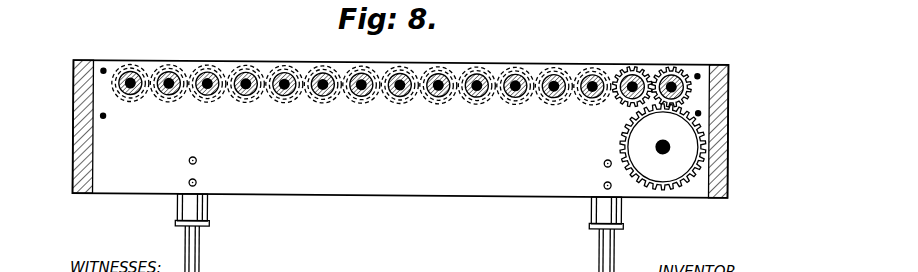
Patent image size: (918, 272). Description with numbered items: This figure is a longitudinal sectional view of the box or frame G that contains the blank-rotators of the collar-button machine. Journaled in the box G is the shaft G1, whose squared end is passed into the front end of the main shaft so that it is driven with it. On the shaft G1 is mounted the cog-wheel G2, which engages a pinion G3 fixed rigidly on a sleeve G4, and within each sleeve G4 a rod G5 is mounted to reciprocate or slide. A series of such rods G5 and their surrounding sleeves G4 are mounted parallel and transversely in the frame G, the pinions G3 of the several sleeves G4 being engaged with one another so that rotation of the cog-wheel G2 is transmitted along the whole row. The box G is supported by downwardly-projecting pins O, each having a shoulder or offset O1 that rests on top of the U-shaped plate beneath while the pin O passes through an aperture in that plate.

The box or frame G is at (401, 129).
The shaft G1 is at (674, 147).
The cog-wheel G2 is at (663, 147).
The pinion G3 is at (663, 64).
The sleeve G4 is at (208, 78).
The rod G5 is at (739, 82).
The downwardly-projecting pin O is at (202, 253).
The shoulder or offset O1 is at (210, 226).